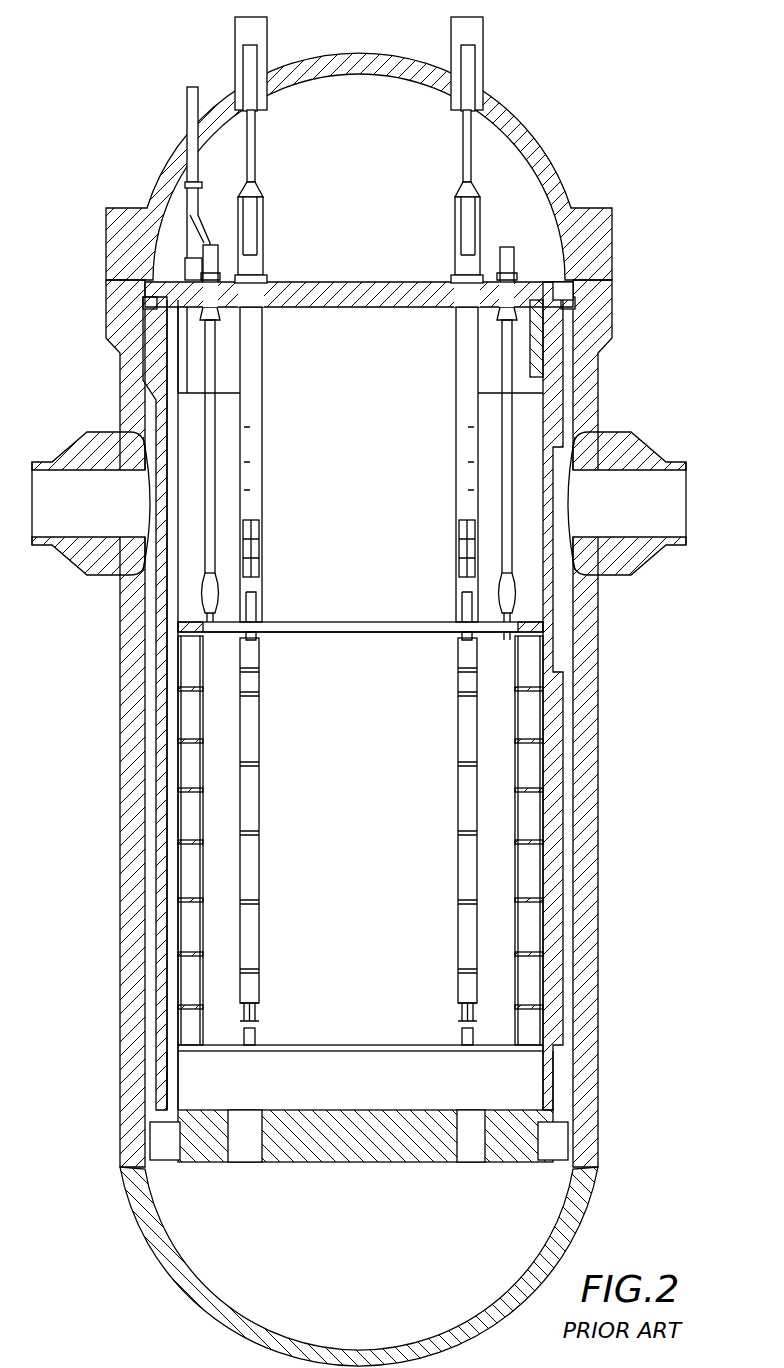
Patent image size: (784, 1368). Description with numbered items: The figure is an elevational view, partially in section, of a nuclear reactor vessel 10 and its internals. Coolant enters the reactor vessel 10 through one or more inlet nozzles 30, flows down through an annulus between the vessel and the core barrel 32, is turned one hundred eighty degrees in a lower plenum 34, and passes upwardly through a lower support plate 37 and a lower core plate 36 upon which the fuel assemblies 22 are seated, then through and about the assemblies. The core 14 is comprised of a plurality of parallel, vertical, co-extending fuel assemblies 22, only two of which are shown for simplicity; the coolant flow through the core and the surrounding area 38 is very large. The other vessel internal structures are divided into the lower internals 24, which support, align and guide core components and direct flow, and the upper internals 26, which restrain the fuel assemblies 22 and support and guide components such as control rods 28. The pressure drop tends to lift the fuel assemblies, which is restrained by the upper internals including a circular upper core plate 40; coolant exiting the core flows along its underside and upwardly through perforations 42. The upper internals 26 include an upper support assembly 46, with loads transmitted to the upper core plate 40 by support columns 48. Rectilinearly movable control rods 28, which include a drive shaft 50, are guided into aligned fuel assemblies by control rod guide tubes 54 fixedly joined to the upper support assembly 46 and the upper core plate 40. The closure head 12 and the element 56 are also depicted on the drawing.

The reactor vessel 10 is at (598, 668).
The closure head 12 is at (612, 240).
The core 14 is at (353, 802).
The fuel assemblies 22 is at (257, 725).
The lower internals 24 is at (347, 1091).
The upper internals 26 is at (348, 466).
The control rods 28 is at (455, 627).
The inlet nozzles 30 is at (87, 432).
The core barrel 32 is at (174, 622).
The lower plenum 34 is at (548, 1196).
The lower core plate 36 is at (424, 1044).
The lower support plate 37 is at (396, 1156).
The surrounding area 38 is at (442, 808).
The upper core plate 40 is at (379, 634).
The perforations 42 is at (303, 620).
The upper support assembly 46 is at (553, 280).
The support columns 48 is at (212, 473).
The drive shaft 50 is at (458, 600).
The control rod guide tubes 54 is at (264, 348).
The control rod 56 is at (480, 634).